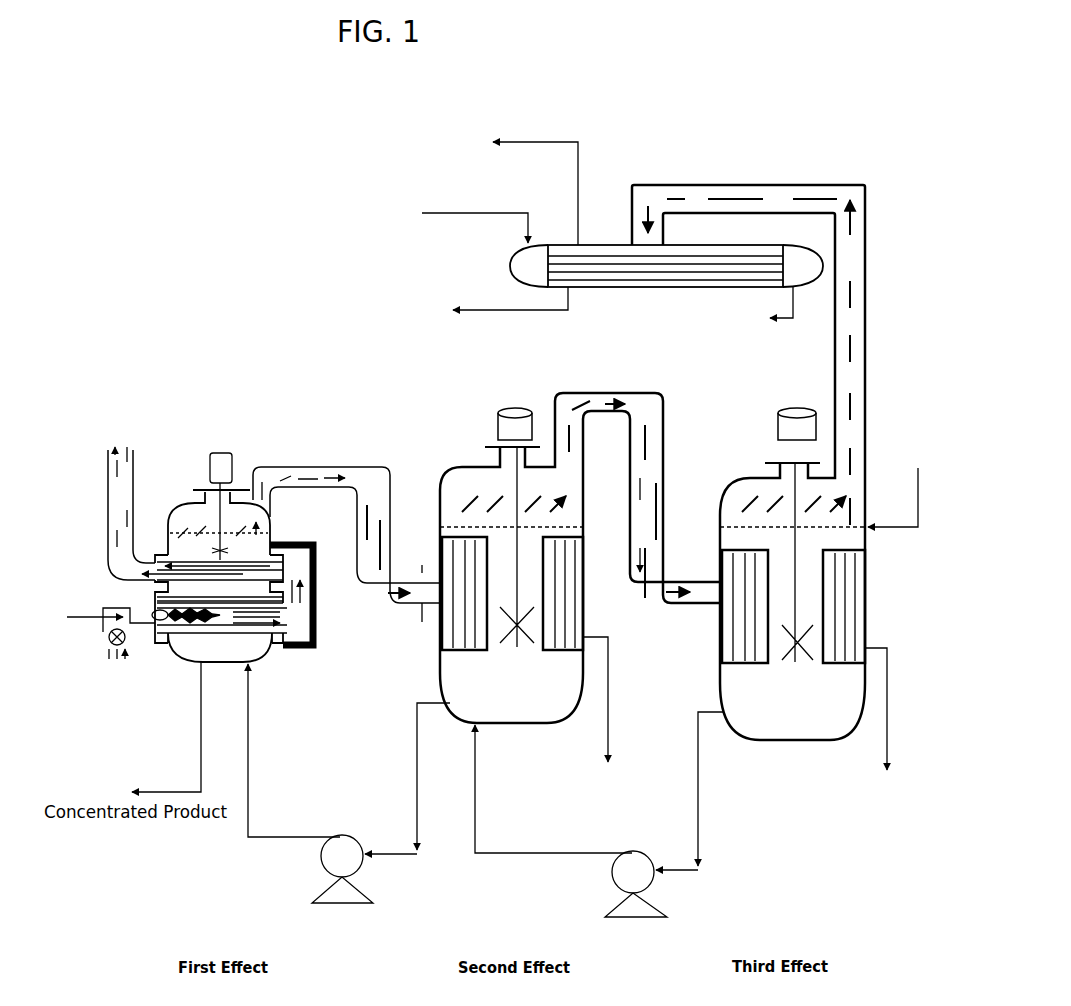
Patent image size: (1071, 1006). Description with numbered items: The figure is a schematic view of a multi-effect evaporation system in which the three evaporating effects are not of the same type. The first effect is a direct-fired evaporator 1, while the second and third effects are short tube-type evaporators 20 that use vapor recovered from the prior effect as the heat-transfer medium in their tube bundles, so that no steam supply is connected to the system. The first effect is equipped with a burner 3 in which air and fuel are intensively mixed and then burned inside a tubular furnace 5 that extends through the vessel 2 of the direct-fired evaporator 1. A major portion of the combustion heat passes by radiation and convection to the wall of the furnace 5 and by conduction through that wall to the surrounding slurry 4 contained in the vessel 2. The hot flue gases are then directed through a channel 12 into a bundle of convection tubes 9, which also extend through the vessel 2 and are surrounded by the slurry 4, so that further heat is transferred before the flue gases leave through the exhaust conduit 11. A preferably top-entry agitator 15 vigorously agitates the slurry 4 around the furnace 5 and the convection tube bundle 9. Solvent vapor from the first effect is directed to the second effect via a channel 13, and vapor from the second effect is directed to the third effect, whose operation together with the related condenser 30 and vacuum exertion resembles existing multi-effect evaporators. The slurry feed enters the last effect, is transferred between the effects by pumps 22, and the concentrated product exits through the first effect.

The direct-fired evaporator 1 is at (182, 493).
The vessel 2 is at (247, 642).
The burner 3 is at (98, 595).
The slurry 4 is at (248, 542).
The tubular furnace 5 is at (190, 637).
The convection tubes 9 is at (197, 583).
The exhaust conduit 11 is at (113, 515).
The channel 12 is at (300, 620).
The channel 13 is at (313, 455).
The agitator 15 is at (232, 460).
The short tube-type evaporators 20 is at (482, 458).
The pumps 22 is at (315, 858).
The condenser 30 is at (598, 225).